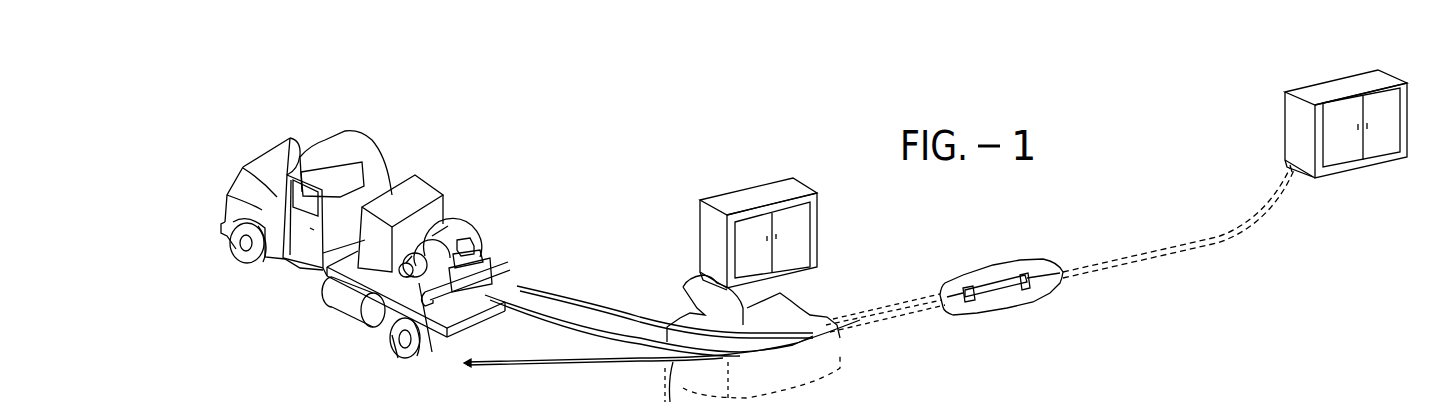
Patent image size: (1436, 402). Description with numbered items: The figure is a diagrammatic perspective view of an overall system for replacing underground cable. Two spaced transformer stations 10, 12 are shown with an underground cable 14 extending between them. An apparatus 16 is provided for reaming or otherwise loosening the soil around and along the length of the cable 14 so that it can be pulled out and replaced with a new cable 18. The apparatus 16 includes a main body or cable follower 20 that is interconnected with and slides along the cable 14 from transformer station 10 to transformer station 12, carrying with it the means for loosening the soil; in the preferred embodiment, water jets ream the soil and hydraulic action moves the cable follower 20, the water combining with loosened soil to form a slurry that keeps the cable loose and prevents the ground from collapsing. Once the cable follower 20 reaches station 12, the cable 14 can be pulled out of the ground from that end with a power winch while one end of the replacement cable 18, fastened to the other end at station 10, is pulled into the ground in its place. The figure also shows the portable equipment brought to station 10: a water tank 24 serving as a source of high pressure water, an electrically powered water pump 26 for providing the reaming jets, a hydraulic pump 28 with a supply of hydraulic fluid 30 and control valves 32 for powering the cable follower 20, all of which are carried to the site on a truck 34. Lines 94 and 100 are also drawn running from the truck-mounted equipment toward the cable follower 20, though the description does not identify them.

The transformer station 10 is at (757, 180).
The transformer station 12 is at (1320, 72).
The underground cable 14 is at (1220, 244).
The apparatus 16 is at (1054, 306).
The new cable 18 is at (593, 362).
The cable follower 20 is at (1022, 254).
The water tank 24 is at (343, 300).
The water pump 26 is at (467, 230).
The hydraulic pump 28 is at (464, 307).
The supply of hydraulic fluid 30 is at (422, 190).
The control valves 32 is at (430, 225).
The truck 34 is at (372, 150).
The cable 94 is at (622, 318).
The cable 100 is at (623, 318).